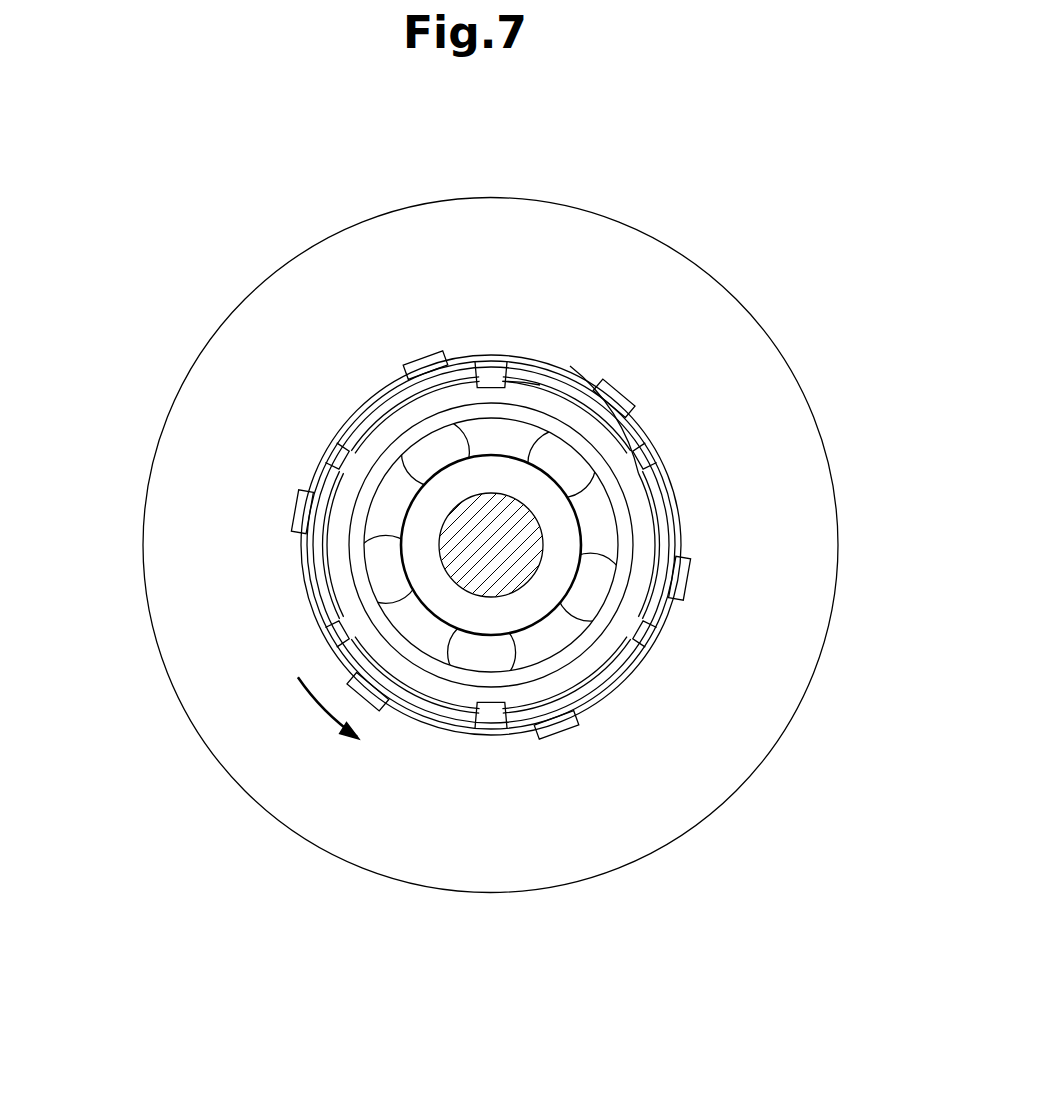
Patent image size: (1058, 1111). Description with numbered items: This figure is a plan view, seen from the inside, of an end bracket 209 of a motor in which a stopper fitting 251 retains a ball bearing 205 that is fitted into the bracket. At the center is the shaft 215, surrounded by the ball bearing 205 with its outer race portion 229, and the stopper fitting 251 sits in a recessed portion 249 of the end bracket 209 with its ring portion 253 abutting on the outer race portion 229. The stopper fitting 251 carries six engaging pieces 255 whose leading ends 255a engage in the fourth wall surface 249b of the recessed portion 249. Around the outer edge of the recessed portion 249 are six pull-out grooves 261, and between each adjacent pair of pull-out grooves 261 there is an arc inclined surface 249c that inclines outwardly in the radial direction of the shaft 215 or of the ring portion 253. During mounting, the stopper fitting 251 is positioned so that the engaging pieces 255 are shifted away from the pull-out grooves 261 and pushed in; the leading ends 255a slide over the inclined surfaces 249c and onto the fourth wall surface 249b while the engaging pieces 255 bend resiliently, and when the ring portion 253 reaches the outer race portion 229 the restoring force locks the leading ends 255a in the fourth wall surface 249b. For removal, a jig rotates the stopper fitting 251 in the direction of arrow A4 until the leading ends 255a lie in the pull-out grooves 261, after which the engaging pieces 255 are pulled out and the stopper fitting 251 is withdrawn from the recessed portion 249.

The ball bearing 205 is at (420, 548).
The end bracket 209 is at (708, 343).
The shaft 215 is at (512, 585).
The outer race portion 229 is at (360, 575).
The recessed portion 249 is at (665, 562).
The fourth wall surface 249b is at (547, 403).
The arc inclined surface 249c is at (578, 392).
The stopper fitting 251 is at (618, 388).
The ring portion 253 is at (653, 417).
The engaging piece 255 is at (502, 356).
The leading end 255a is at (483, 352).
The pull-out groove 261 is at (422, 368).
The arrow A4 is at (330, 713).